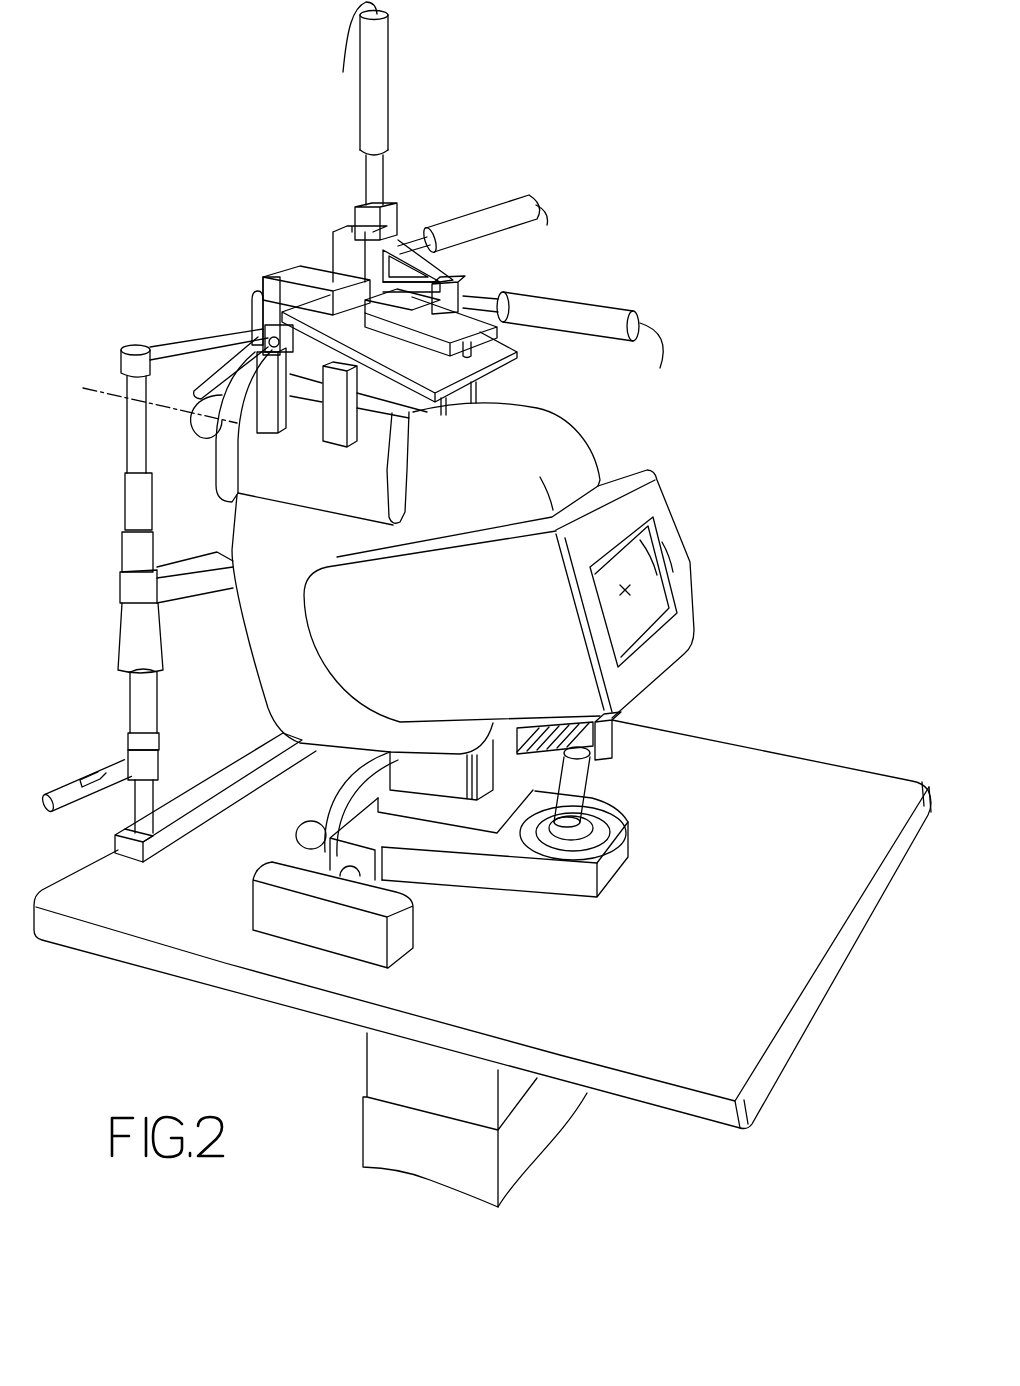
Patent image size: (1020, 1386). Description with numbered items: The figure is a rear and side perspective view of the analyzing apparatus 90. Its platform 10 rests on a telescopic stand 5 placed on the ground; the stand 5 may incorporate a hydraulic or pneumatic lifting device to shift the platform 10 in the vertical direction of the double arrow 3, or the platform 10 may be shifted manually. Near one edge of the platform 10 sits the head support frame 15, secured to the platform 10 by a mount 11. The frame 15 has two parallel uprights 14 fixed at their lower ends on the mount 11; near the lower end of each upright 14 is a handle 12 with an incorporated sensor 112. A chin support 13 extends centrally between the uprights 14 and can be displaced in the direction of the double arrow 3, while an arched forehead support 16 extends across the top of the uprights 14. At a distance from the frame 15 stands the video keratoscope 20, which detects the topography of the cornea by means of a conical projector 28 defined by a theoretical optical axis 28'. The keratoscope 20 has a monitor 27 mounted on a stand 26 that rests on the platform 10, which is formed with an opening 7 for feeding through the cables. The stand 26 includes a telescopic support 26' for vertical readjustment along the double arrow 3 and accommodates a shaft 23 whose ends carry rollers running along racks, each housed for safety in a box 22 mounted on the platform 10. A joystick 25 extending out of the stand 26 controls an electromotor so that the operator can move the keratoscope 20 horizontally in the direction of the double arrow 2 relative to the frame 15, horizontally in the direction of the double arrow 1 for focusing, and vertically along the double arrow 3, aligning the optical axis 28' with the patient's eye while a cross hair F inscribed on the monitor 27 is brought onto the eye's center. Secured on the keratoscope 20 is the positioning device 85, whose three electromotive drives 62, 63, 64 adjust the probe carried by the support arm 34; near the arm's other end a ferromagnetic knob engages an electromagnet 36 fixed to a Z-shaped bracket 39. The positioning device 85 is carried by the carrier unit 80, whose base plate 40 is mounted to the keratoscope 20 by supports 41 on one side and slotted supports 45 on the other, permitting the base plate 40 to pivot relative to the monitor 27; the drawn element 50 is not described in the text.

The double arrow I 1 is at (735, 886).
The double arrow 2 is at (490, 990).
The double arrow 3 is at (597, 1203).
The telescopic stand 5 is at (352, 1087).
The opening 7 is at (314, 836).
The platform 10 is at (790, 775).
The mount 11 is at (220, 786).
The handle 12 is at (67, 798).
The sensor 112 is at (95, 778).
The chin support 13 is at (186, 590).
The upright 14 is at (138, 428).
The head support frame 15 is at (144, 322).
The forehead support 16 is at (188, 336).
The video keratoscope 20 is at (676, 466).
The box 22 is at (612, 740).
The shaft 23 is at (350, 873).
The joystick 25 is at (608, 790).
The stand 26 is at (479, 869).
The telescopic support 26' is at (463, 835).
The monitor 27 is at (683, 632).
The projector 28 is at (192, 441).
The optical axis 28' is at (153, 377).
The support arm 34 is at (228, 350).
The electromagnet 36 is at (252, 297).
The bracket 39 is at (302, 272).
The base plate 40 is at (500, 363).
The support 41 is at (268, 410).
The support 45 is at (338, 434).
The slide plate 50 is at (463, 324).
The electromotive drive 62 is at (578, 312).
The electromotive drive 63 is at (382, 103).
The electromotive drive 64 is at (471, 215).
The carrier unit 80 is at (533, 358).
The positioning device 85 is at (318, 240).
The analyzing apparatus 90 is at (150, 160).
The cross hair F is at (618, 592).